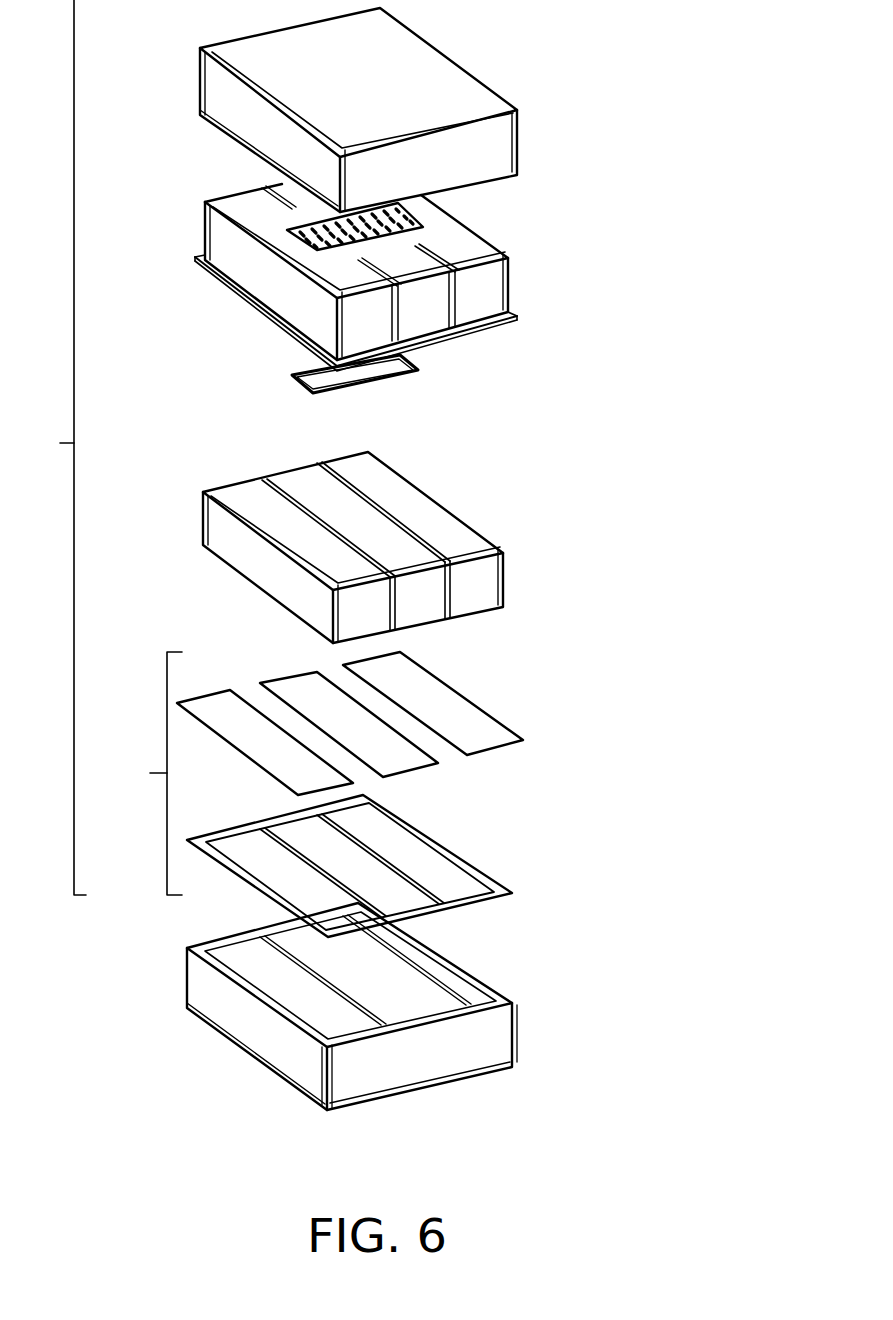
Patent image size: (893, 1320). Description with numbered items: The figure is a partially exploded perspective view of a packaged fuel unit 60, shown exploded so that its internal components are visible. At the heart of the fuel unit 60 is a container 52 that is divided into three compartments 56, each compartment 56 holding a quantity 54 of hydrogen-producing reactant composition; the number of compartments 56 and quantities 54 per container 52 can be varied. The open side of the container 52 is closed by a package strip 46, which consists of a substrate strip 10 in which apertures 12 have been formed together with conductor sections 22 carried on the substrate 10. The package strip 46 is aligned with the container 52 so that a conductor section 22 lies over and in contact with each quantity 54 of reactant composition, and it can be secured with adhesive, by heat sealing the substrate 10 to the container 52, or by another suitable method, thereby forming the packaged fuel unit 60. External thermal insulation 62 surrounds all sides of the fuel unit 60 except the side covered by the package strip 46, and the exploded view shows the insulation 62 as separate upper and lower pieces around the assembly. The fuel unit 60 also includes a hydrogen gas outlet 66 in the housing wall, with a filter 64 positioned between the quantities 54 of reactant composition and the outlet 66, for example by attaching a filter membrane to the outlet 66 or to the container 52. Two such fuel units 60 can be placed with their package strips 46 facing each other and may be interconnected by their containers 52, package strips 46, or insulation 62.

The substrate strip 10 is at (379, 879).
The apertures 12 is at (378, 830).
The conductor sections 22 is at (338, 705).
The package strip 46 is at (141, 773).
The container 52 is at (407, 547).
The quantity of reactant composition 54 is at (352, 515).
The compartments 56 is at (482, 292).
The packaged fuel unit 60 is at (237, 1065).
The external thermal insulation 62 is at (412, 70).
The filter 64 is at (355, 378).
The hydrogen gas outlet 66 is at (420, 220).